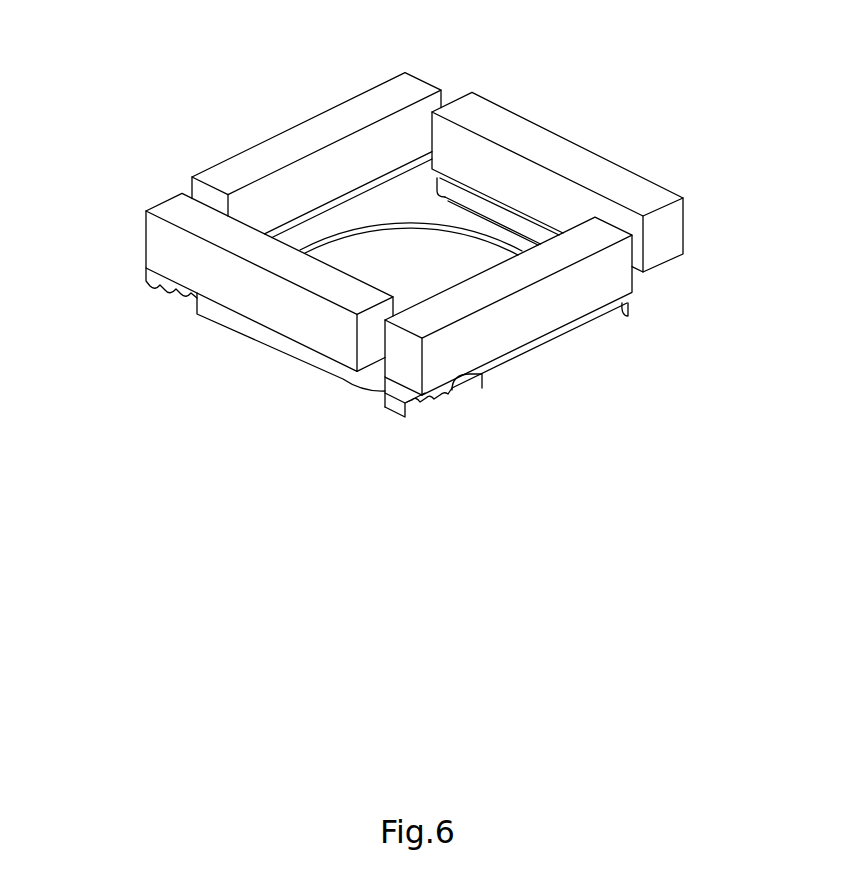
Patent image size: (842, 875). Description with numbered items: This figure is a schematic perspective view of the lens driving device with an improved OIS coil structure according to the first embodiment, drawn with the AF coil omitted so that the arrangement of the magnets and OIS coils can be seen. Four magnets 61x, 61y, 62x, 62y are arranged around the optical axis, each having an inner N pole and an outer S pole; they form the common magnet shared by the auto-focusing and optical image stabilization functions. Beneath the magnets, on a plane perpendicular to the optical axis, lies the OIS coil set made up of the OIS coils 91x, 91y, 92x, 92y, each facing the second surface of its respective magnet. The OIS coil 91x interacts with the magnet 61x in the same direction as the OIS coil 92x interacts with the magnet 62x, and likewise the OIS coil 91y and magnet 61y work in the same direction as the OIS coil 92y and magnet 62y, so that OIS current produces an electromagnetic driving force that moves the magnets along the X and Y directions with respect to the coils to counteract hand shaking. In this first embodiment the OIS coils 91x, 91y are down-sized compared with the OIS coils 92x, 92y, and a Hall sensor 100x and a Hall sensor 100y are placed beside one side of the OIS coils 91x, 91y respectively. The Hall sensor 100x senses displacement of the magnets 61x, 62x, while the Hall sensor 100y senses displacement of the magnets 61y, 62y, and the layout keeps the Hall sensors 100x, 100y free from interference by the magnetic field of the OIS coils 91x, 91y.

The magnet 61x is at (622, 277).
The magnet 61y is at (345, 353).
The magnet 62x is at (320, 123).
The magnet 62y is at (595, 170).
The OIS coil 91x is at (558, 345).
The OIS coil 91y is at (267, 343).
The OIS coil 92x is at (362, 196).
The OIS coil 92y is at (520, 226).
The Hall sensor 100x is at (422, 405).
The Hall sensor 100y is at (162, 285).